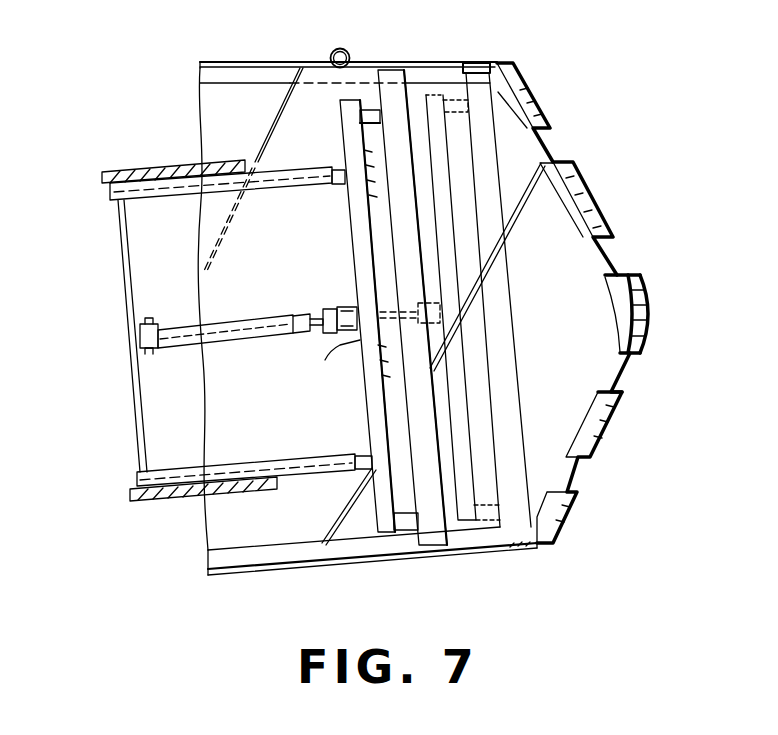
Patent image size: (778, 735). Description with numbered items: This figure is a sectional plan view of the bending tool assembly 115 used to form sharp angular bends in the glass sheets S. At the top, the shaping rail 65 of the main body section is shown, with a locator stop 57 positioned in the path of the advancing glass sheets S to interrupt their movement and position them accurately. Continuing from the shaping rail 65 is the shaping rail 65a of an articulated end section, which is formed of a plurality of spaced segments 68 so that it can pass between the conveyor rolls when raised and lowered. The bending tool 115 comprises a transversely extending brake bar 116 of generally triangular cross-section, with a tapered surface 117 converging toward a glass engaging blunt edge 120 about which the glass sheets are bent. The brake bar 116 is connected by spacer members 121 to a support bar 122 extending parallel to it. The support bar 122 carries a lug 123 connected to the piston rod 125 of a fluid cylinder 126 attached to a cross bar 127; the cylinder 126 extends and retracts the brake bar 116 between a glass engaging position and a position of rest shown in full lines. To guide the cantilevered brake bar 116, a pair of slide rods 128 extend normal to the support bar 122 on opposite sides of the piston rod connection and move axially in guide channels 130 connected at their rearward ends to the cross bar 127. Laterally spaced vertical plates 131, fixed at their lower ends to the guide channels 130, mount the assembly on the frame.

The glass sheets S is at (223, 120).
The locator stop 57 is at (357, 50).
The shaping rail 65 is at (250, 62).
The shaping rail 65a is at (580, 173).
The segments 68 is at (622, 394).
The bending tool 115 is at (357, 510).
The brake bar 116 is at (437, 422).
The tapered surface 117 is at (440, 537).
The glass engaging blunt edge 120 is at (440, 502).
The spacer members 121 is at (348, 93).
The support bar 122 is at (363, 277).
The lug 123 is at (355, 330).
The piston rod 125 is at (320, 329).
The fluid cylinder 126 is at (227, 333).
The cross bar 127 is at (120, 300).
The slide rods 128 is at (341, 178).
The guide channels 130 is at (170, 188).
The plates 131 is at (103, 172).